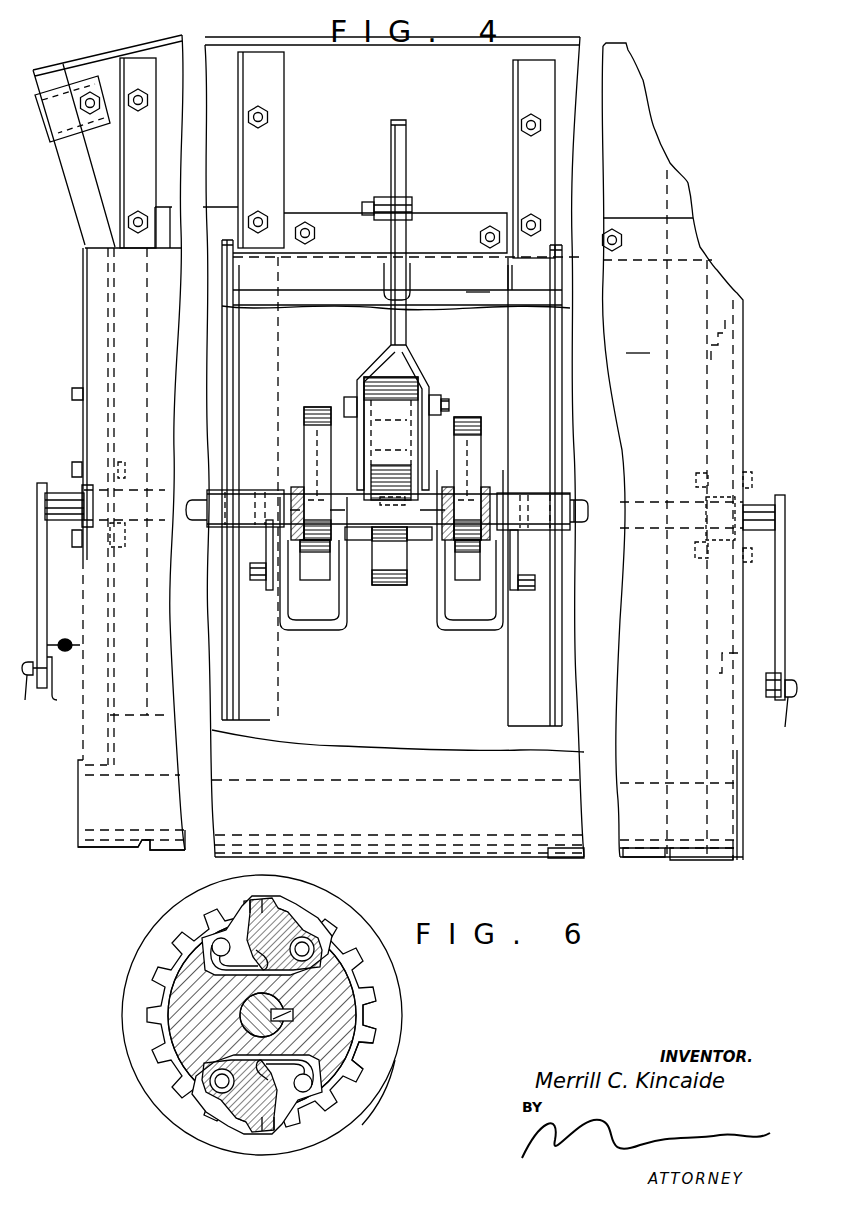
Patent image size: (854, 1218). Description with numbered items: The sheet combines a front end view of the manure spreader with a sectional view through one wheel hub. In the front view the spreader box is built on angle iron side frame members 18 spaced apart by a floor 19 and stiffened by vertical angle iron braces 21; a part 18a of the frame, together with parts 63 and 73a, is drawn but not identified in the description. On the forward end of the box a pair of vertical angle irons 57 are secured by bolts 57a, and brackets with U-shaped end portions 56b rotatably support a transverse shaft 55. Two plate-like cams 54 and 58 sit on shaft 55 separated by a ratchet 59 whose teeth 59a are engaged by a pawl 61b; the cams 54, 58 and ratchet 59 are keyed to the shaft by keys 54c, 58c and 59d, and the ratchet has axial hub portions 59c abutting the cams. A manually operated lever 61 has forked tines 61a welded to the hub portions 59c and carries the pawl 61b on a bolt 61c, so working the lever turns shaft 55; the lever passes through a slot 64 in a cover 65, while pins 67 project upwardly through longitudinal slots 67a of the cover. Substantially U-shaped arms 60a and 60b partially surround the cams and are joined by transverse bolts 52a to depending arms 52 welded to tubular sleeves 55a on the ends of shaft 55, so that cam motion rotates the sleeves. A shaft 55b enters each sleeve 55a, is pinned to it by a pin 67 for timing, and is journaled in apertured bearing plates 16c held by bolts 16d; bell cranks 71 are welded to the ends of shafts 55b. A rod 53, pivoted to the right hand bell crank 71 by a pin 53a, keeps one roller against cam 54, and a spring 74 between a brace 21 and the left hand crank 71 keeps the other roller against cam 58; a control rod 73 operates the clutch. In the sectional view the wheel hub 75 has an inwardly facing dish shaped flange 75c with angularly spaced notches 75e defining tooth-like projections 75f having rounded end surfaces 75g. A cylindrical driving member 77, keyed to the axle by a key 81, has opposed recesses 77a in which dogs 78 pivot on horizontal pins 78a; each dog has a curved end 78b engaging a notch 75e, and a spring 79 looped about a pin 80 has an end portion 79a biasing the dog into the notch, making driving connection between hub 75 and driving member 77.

In FIG. 4, the bearing plate 16c is at (80, 470).
In FIG. 4, the bolt 16d is at (127, 472).
In FIG. 4, the side frame member 18 is at (108, 850).
In FIG. 4, the base flange portion 18a is at (556, 858).
In FIG. 4, the floor 19 is at (474, 782).
In FIG. 4, the brace 21 is at (84, 347).
In FIG. 4, the depending arm 52 is at (266, 547).
In FIG. 4, the transverse bolt 52a is at (256, 580).
In FIG. 4, the rod 53 is at (783, 716).
In FIG. 4, the pin 53a is at (772, 697).
In FIG. 4, the cam 54 is at (470, 418).
In FIG. 4, the key 54c is at (470, 478).
In FIG. 4, the transverse shaft 55 is at (515, 500).
In FIG. 4, the tubular sleeve 55a is at (268, 490).
In FIG. 4, the shaft 55b is at (62, 495).
In FIG. 4, the U-shaped end portion 56b is at (298, 487).
In FIG. 4, the angle iron 57 is at (284, 84).
In FIG. 4, the bolt 57a is at (270, 120).
In FIG. 4, the cam 58 is at (318, 407).
In FIG. 4, the key 58c is at (318, 465).
In FIG. 4, the ratchet 59 is at (393, 586).
In FIG. 4, the ratchet tooth 59a is at (388, 552).
In FIG. 4, the hub portion 59c is at (361, 541).
In FIG. 4, the key 59d is at (392, 496).
In FIG. 4, the arm 60a is at (486, 632).
In FIG. 4, the arm 60b is at (318, 632).
In FIG. 4, the lever 61 is at (406, 186).
In FIG. 4, the tine 61a is at (372, 368).
In FIG. 4, the pawl 61b is at (384, 437).
In FIG. 4, the bolt 61c is at (445, 407).
In FIG. 4, the pivot bolt 63 is at (441, 398).
In FIG. 4, the slot 64 is at (411, 297).
In FIG. 4, the cover 65 is at (604, 451).
In FIG. 4, the pin 67 is at (222, 436).
In FIG. 4, the longitudinal slot 67a is at (272, 293).
In FIG. 4, the bell crank 71 is at (45, 628).
In FIG. 4, the control rod 73 is at (32, 691).
In FIG. 4, the spring bracket 73a is at (56, 697).
In FIG. 4, the spring 74 is at (65, 651).
In FIG. 6, the hub 75 is at (372, 1114).
In FIG. 6, the flange 75c is at (371, 1092).
In FIG. 6, the notch 75e is at (368, 978).
In FIG. 6, the tooth-like projection 75f is at (376, 995).
In FIG. 6, the rounded end surface 75g is at (354, 1018).
In FIG. 6, the driving member 77 is at (342, 1043).
In FIG. 6, the recess 77a is at (216, 933).
In FIG. 6, the dog 78 is at (300, 930).
In FIG. 6, the horizontal pin 78a is at (312, 942).
In FIG. 6, the curved end 78b is at (282, 912).
In FIG. 6, the spring 79 is at (240, 935).
In FIG. 6, the end portion 79a is at (258, 928).
In FIG. 6, the horizontal pin 80 is at (220, 940).
In FIG. 6, the key 81 is at (331, 1050).